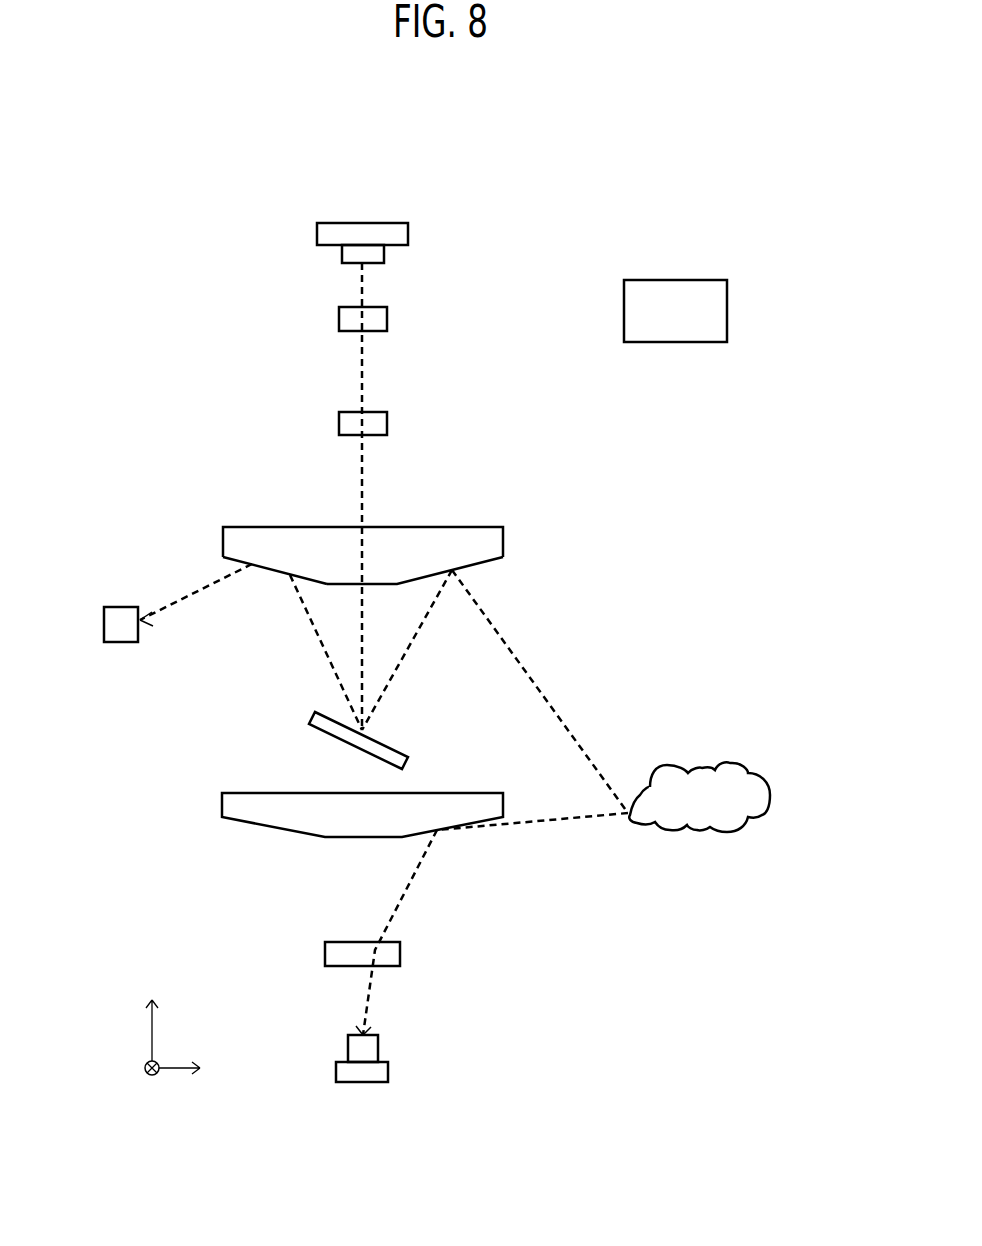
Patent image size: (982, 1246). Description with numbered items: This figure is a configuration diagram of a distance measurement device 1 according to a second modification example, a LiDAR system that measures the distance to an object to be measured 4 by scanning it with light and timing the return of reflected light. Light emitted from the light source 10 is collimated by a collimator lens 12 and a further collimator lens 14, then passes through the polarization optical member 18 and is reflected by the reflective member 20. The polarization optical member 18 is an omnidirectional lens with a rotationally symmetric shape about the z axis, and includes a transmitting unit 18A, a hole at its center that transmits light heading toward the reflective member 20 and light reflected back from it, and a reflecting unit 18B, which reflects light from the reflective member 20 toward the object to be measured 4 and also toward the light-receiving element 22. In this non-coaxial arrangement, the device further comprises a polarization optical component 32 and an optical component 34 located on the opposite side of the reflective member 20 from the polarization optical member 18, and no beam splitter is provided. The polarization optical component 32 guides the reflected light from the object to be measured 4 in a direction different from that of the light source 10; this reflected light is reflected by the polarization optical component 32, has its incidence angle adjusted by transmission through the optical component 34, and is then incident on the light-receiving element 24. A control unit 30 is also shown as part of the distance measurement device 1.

The distance measurement device 1 is at (716, 186).
The object to be measured 4 is at (737, 762).
The light source 10 is at (317, 233).
The collimator lens 12 is at (339, 318).
The collimator lens 14 is at (339, 420).
The polarization optical member 18 is at (289, 508).
The transmitting unit 18A is at (332, 565).
The reflecting unit 18B is at (253, 565).
The reflective member 20 is at (320, 730).
The light-receiving element 22 is at (113, 607).
The light-receiving element 24 is at (388, 1072).
The control unit 30 is at (700, 280).
The polarization optical component 32 is at (222, 804).
The optical component 34 is at (325, 952).